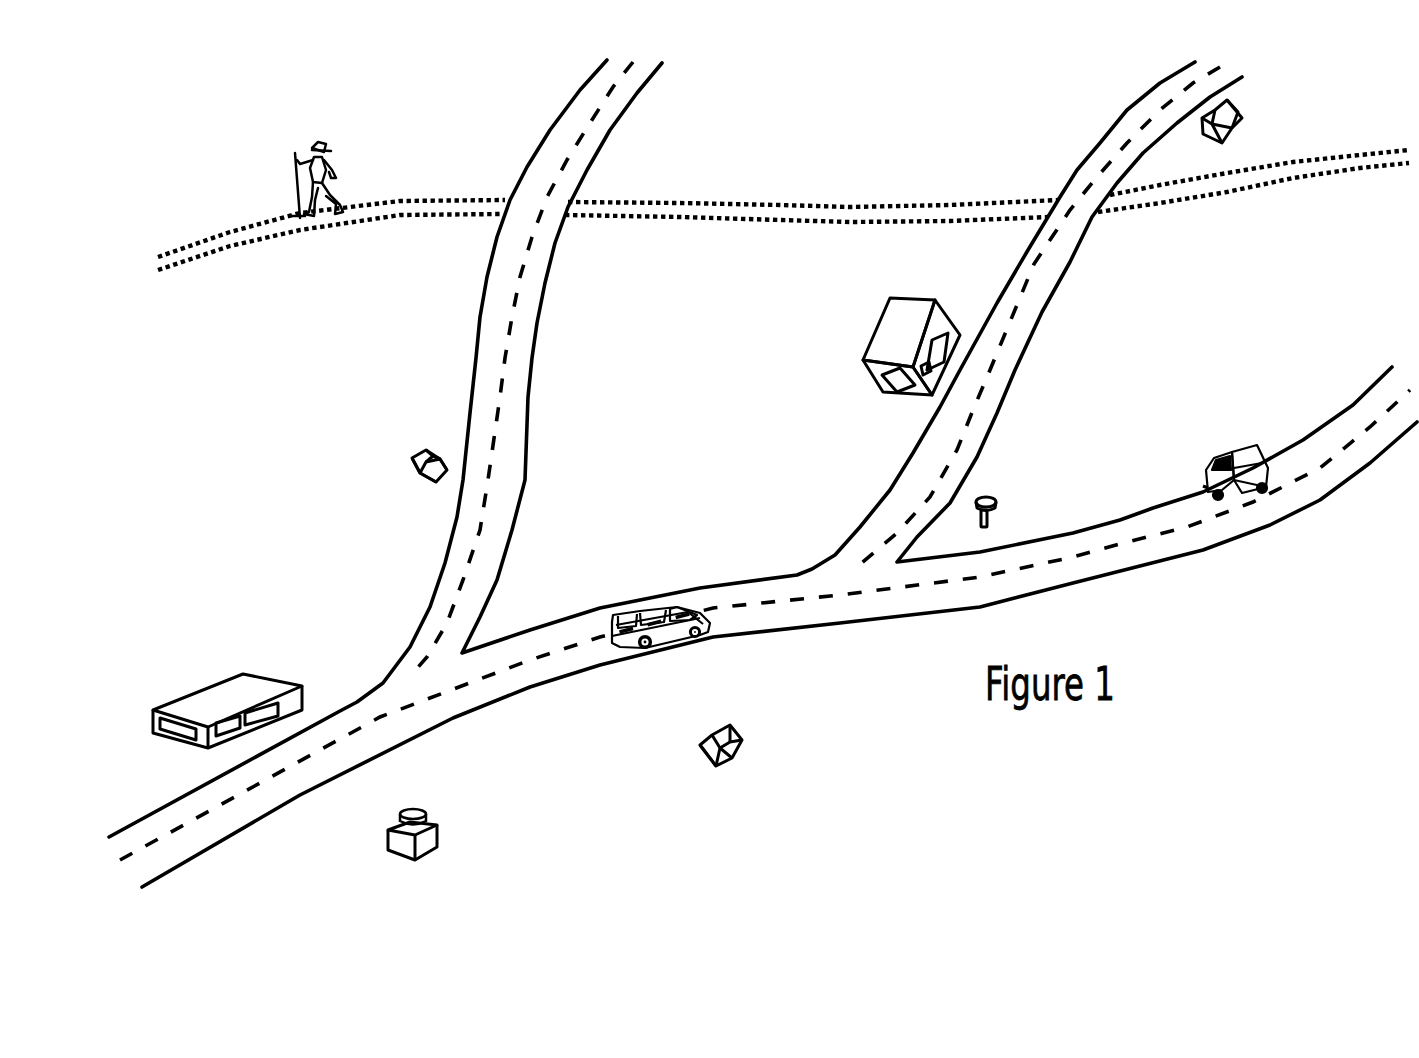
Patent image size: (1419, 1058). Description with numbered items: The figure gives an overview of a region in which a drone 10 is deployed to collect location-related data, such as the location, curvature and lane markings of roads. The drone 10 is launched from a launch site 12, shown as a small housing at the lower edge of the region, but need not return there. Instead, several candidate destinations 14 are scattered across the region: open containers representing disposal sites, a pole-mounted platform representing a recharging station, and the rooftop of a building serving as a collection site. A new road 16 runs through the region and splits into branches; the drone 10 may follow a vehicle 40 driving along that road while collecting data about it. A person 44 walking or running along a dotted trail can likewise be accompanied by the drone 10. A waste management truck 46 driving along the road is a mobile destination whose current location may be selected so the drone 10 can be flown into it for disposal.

The drone 10 is at (412, 813).
The launch site 12 is at (428, 840).
The candidate destinations 14 is at (248, 678).
The new road 16 is at (450, 585).
The vehicle 40 is at (652, 608).
The person 44 is at (333, 173).
The waste management truck 46 is at (1248, 447).